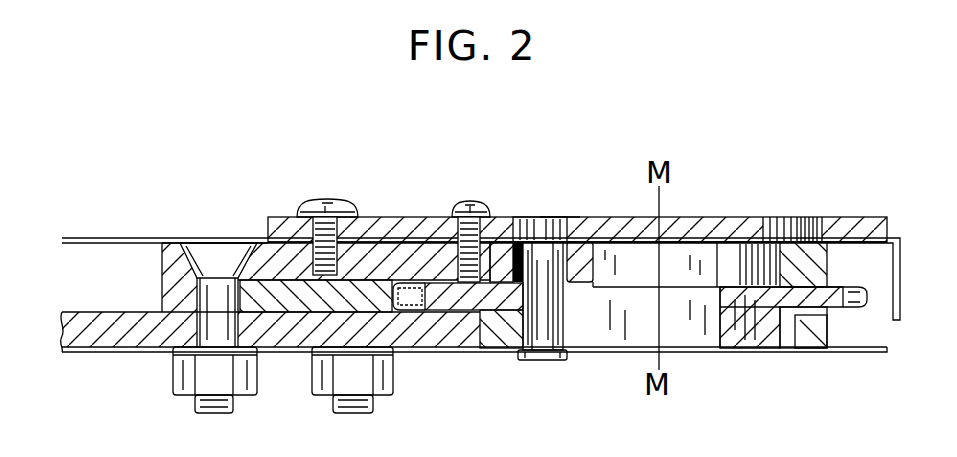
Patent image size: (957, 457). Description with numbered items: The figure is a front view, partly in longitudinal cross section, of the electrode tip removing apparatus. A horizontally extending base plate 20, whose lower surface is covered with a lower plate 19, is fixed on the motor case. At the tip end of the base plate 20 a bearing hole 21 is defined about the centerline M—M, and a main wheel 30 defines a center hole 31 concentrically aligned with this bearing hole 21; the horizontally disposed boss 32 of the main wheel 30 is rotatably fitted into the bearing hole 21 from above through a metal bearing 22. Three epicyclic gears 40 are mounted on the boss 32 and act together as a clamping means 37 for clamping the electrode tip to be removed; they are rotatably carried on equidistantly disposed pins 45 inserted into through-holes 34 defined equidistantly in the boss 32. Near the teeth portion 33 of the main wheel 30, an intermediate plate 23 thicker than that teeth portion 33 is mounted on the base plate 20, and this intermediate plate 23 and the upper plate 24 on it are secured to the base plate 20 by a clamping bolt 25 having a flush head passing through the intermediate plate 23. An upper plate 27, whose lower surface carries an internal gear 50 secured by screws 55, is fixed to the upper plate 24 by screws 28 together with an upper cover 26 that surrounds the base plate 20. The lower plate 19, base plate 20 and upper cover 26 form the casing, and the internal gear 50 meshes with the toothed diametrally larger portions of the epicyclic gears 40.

The lower plate 19 is at (80, 352).
The base plate 20 is at (130, 335).
The bearing hole 21 is at (445, 352).
The bearing 22 is at (487, 352).
The intermediate plate 23 is at (165, 348).
The upper plate 24 is at (268, 262).
The clamping bolt 25 is at (203, 248).
The upper cover 26 is at (88, 238).
The upper plate 27 is at (848, 217).
The screws 28 is at (332, 204).
The main wheel 30 is at (760, 333).
The center hole 31 is at (718, 305).
The boss 32 is at (755, 325).
The teeth portion 33 is at (860, 302).
The through-holes 34 is at (537, 362).
The clamping means 37 is at (556, 212).
The epicyclic gears 40 is at (596, 282).
The pins 45 is at (580, 300).
The internal gear 50 is at (797, 217).
The screws 55 is at (468, 203).